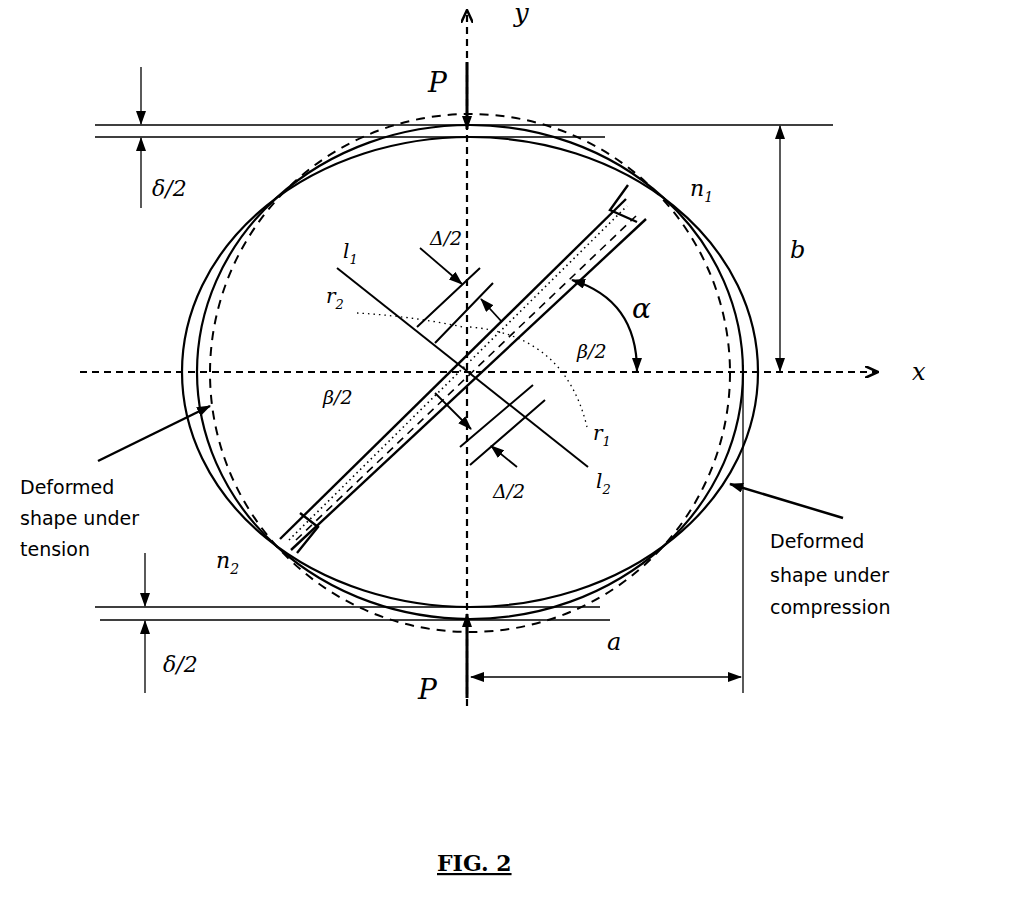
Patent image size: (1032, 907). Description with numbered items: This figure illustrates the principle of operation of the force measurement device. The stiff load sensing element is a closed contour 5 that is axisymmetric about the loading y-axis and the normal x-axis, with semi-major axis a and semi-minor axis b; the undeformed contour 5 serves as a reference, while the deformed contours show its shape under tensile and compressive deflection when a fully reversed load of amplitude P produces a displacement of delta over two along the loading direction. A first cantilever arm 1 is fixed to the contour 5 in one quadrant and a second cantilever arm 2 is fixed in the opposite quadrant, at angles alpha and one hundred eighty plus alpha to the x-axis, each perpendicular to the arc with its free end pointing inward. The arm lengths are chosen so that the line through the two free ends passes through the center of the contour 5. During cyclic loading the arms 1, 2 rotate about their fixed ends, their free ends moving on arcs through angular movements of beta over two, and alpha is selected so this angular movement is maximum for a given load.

The first cantilever arm 1 is at (570, 313).
The second cantilever arm 2 is at (373, 413).
The closed contour 5 is at (188, 339).